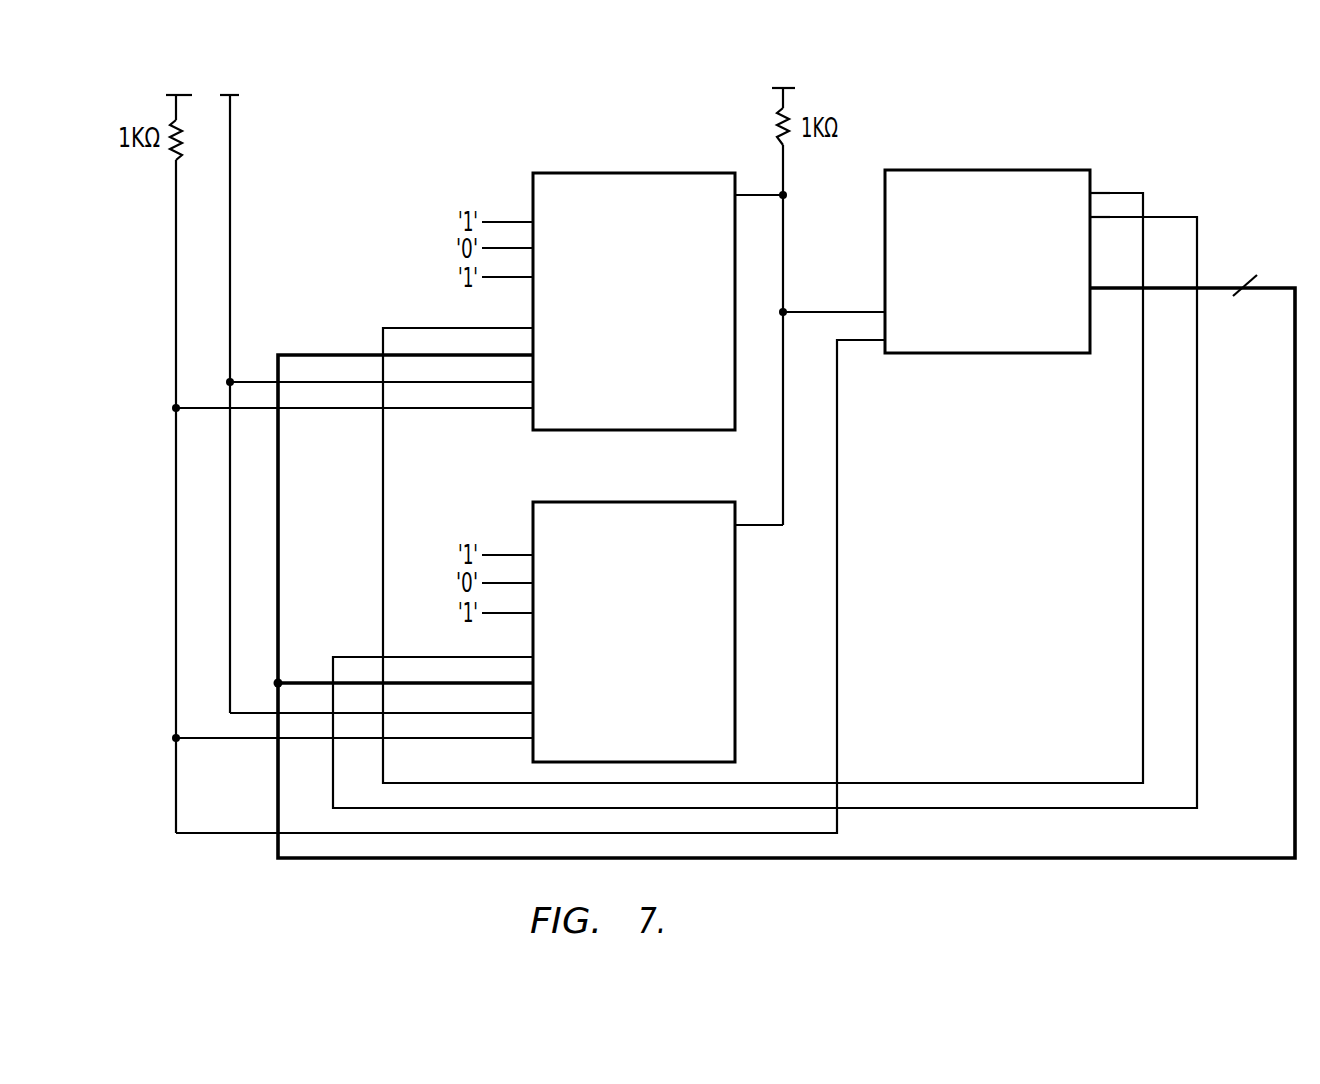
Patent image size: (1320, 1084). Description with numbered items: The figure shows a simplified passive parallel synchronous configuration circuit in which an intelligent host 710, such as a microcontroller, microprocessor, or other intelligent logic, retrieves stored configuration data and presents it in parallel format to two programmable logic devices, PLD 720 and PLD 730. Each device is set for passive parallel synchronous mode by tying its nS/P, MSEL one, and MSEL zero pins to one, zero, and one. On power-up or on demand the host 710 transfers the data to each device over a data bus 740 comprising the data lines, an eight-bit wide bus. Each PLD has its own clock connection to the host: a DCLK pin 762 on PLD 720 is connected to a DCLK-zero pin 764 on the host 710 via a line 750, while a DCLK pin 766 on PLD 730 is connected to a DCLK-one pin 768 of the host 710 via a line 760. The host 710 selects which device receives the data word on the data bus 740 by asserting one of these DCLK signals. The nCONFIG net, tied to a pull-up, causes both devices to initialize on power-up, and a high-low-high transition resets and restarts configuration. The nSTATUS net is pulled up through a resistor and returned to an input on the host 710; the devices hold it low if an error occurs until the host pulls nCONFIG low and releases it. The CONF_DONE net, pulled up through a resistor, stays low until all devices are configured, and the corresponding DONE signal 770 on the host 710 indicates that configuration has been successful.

The intelligent host 710 is at (1054, 170).
The PLD 720 is at (696, 173).
The PLD 730 is at (706, 502).
The data bus 740 is at (1273, 289).
The line 750 is at (1143, 433).
The line 760 is at (1197, 433).
The DCLK pin 762 is at (531, 327).
The DCLK0 pin 764 is at (1093, 192).
The DCLK pin 766 is at (531, 657).
The DCLK1 pin 768 is at (1093, 216).
The DONE signal 770 is at (820, 312).